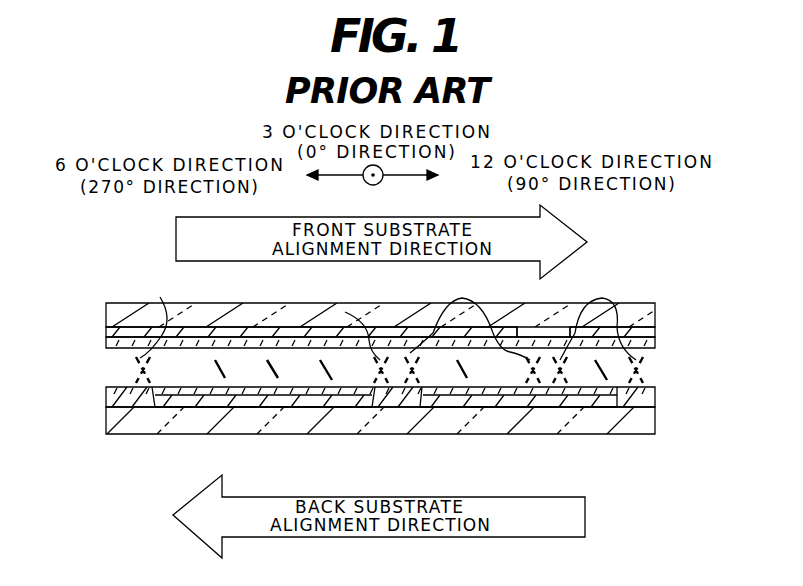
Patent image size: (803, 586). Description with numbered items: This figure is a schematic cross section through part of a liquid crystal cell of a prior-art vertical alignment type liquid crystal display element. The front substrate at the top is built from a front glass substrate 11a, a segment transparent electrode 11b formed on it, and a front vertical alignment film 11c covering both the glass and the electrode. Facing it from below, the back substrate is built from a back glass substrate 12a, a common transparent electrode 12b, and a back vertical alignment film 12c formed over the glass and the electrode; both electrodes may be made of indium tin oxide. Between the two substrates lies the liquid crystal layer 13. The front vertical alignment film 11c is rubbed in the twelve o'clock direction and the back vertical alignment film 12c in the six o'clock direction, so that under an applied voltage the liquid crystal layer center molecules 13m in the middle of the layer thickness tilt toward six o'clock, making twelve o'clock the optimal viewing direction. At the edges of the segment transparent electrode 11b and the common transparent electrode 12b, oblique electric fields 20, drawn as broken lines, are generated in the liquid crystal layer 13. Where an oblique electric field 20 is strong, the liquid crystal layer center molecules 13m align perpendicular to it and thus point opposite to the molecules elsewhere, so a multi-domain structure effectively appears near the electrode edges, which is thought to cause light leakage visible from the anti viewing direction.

The front glass substrate 11a is at (655, 309).
The segment transparent electrode 11b is at (237, 327).
The front vertical alignment film 11c is at (655, 343).
The back glass substrate 12a is at (655, 422).
The common transparent electrode 12b is at (240, 396).
The back vertical alignment film 12c is at (655, 396).
The liquid crystal layer 13 is at (102, 348).
The liquid crystal layer center molecules 13m is at (640, 365).
The oblique electric field 20 is at (136, 340).